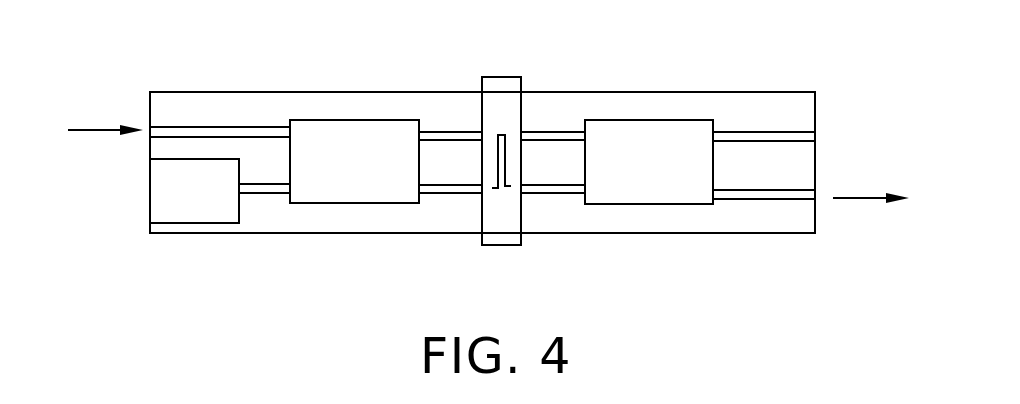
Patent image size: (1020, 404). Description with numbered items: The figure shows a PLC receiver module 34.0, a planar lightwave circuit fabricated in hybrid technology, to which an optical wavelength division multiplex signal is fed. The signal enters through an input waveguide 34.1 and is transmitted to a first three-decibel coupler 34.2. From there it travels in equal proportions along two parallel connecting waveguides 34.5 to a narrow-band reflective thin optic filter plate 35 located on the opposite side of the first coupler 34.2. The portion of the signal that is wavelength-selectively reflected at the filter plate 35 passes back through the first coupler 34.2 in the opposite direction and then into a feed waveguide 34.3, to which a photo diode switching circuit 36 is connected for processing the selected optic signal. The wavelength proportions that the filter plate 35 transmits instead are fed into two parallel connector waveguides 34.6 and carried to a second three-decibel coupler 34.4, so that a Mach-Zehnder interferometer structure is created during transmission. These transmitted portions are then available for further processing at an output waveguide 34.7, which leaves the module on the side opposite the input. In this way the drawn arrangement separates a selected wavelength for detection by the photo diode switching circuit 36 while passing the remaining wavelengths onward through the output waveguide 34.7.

The PLC receiver module 34.0 is at (150, 92).
The input waveguide 34.1 is at (208, 127).
The first 3 dB coupler 34.2 is at (351, 120).
The feed waveguide 34.3 is at (262, 193).
The second 3 dB coupler 34.4 is at (646, 120).
The parallel connecting waveguides 34.5 is at (452, 142).
The parallel connector waveguides 34.6 is at (570, 142).
The output waveguide 34.7 is at (772, 200).
The narrow-band reflective thin optic filter plate 35 is at (504, 93).
The photo diode switching circuit 36 is at (187, 213).